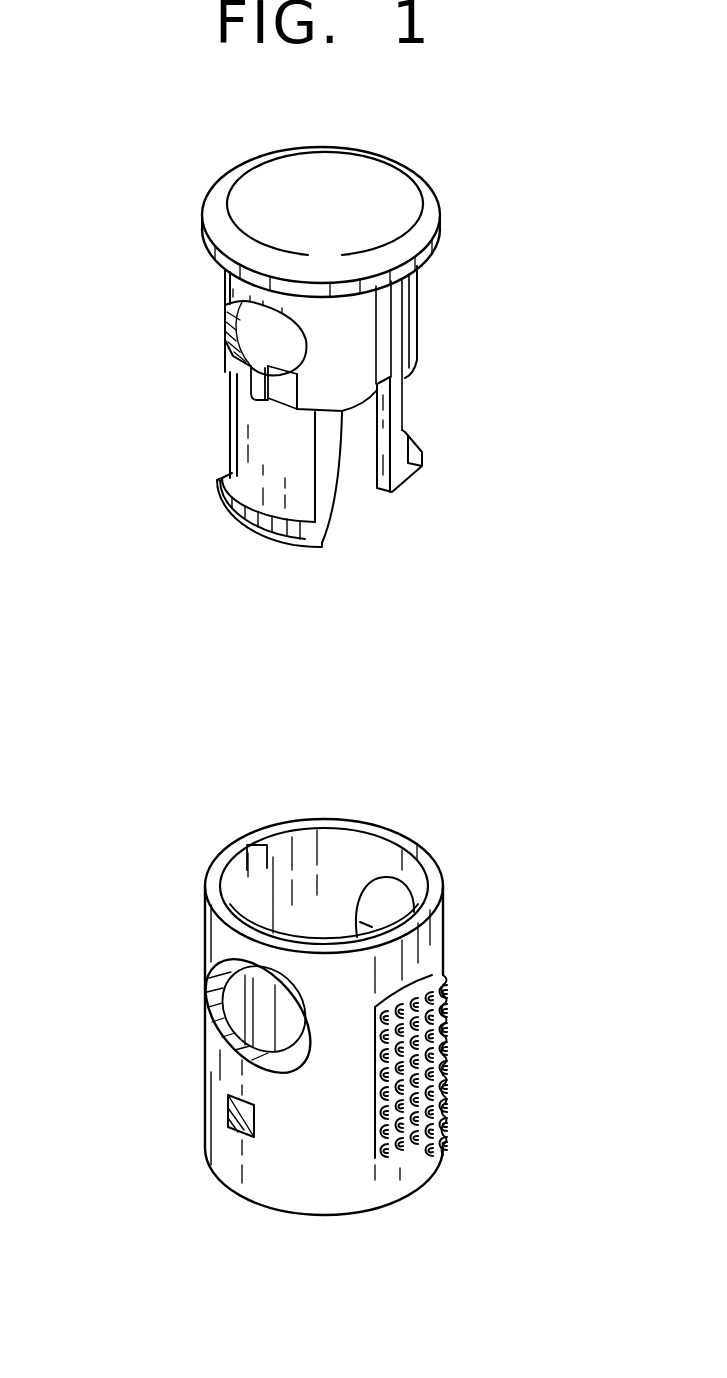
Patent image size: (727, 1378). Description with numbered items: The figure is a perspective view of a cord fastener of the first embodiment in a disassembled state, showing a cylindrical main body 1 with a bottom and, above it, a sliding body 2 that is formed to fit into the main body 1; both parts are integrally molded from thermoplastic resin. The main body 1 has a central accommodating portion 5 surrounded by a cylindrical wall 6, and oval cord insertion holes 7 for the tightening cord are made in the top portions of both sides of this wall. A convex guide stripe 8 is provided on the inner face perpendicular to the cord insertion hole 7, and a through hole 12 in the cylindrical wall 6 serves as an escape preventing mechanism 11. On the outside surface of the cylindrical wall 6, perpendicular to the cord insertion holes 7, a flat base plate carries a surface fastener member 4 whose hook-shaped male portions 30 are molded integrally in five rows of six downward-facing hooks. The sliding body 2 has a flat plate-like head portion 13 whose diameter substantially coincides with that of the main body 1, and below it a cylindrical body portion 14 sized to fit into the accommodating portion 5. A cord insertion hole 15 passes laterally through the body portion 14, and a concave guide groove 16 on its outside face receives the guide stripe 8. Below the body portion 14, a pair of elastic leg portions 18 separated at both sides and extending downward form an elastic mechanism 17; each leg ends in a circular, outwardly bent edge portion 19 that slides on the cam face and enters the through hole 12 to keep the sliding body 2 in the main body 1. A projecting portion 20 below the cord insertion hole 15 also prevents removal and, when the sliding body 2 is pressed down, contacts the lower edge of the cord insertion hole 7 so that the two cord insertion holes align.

The main body 1 is at (452, 948).
The sliding body 2 is at (437, 168).
The surface fastener member 4 is at (460, 1100).
The accommodating portion 5 is at (330, 857).
The cylindrical wall 6 is at (310, 1157).
The cord insertion hole 7 is at (233, 1008).
The guide stripe 8 is at (263, 867).
The escape preventing mechanism 11 is at (210, 1110).
The through hole 12 is at (243, 1130).
The head portion 13 is at (307, 177).
The body portion 14 is at (348, 340).
The cord insertion hole 15 is at (233, 318).
The guide groove 16 is at (397, 300).
The elastic mechanism 17 is at (348, 495).
The elastic leg portion 18 is at (257, 450).
The edge portion 19 is at (232, 523).
The projecting portion 20 is at (257, 393).
The male portion 30 is at (450, 1057).